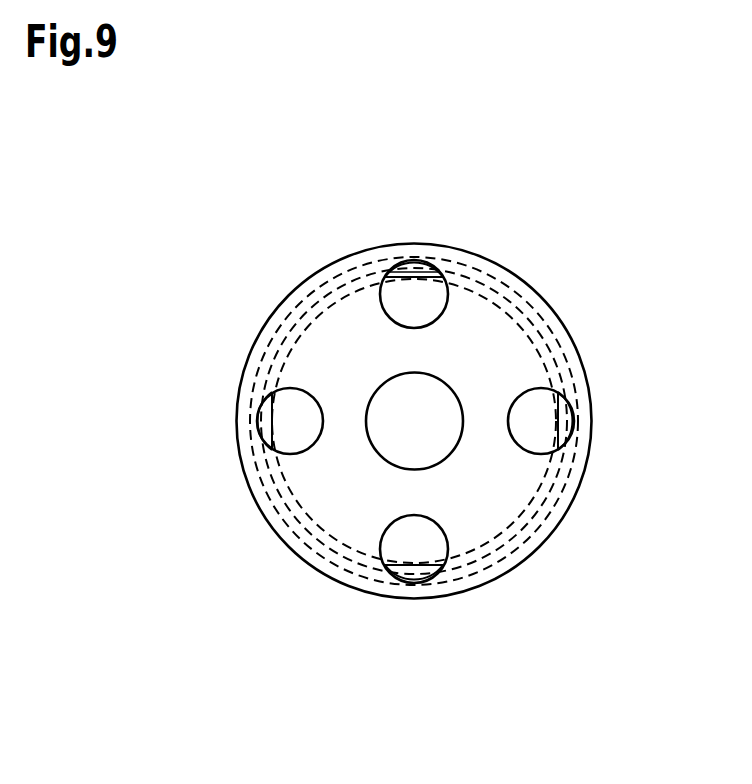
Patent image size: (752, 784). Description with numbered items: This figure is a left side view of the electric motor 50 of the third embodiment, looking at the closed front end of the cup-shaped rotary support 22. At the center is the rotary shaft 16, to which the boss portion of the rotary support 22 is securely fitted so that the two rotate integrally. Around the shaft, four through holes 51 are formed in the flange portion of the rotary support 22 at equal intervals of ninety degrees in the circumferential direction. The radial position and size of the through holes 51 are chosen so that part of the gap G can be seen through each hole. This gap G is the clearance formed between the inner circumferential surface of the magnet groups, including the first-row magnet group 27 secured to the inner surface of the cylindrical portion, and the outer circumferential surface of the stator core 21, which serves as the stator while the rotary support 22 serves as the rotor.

The electric motor 50 is at (352, 157).
The rotary support 22 is at (295, 290).
The rotary shaft 16 is at (440, 448).
The through holes 51 is at (443, 300).
The magnet group 27 is at (418, 262).
The gap G is at (440, 278).
The stator core 21 is at (537, 440).